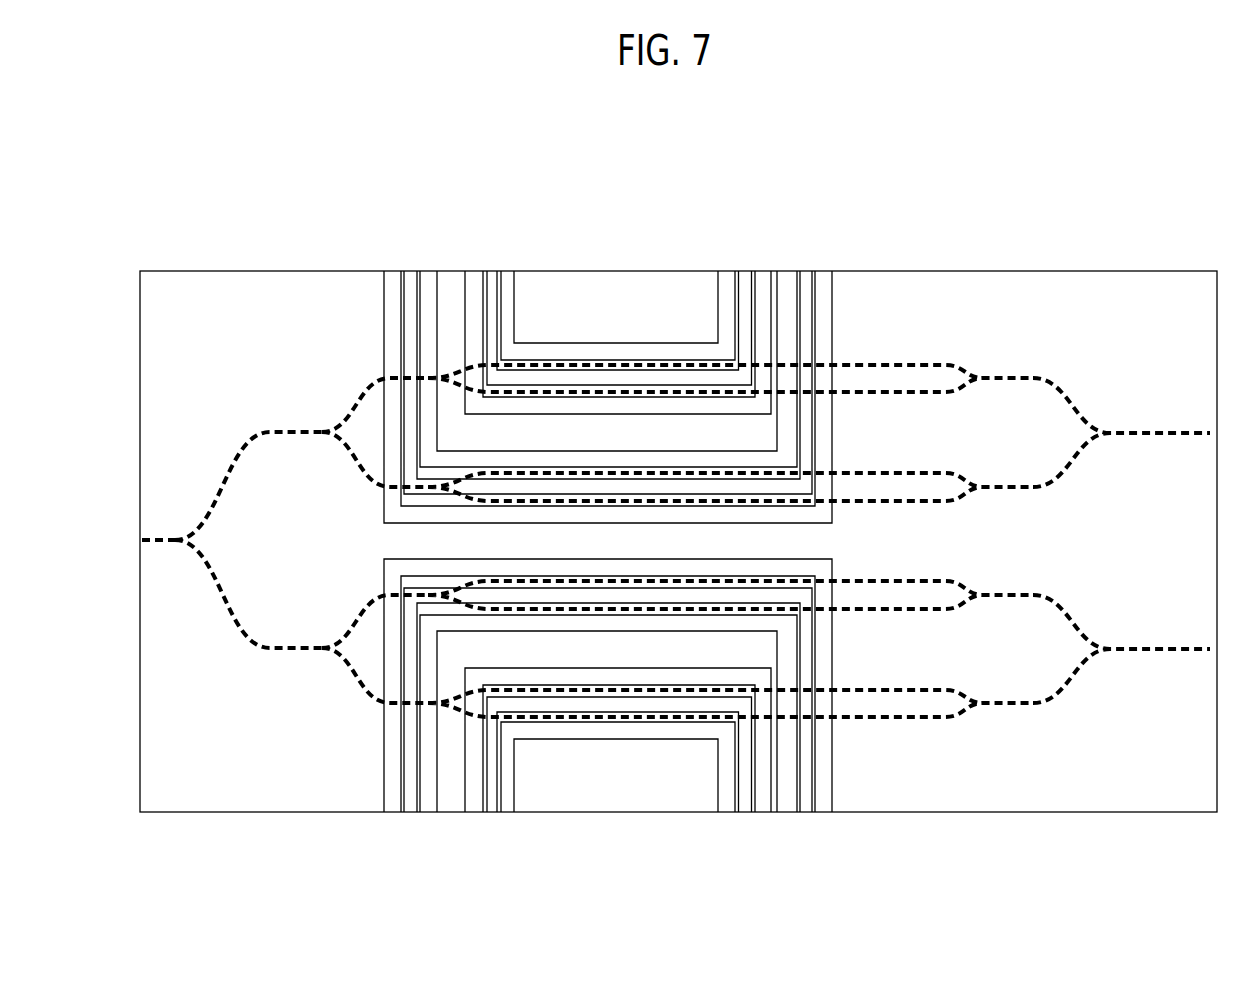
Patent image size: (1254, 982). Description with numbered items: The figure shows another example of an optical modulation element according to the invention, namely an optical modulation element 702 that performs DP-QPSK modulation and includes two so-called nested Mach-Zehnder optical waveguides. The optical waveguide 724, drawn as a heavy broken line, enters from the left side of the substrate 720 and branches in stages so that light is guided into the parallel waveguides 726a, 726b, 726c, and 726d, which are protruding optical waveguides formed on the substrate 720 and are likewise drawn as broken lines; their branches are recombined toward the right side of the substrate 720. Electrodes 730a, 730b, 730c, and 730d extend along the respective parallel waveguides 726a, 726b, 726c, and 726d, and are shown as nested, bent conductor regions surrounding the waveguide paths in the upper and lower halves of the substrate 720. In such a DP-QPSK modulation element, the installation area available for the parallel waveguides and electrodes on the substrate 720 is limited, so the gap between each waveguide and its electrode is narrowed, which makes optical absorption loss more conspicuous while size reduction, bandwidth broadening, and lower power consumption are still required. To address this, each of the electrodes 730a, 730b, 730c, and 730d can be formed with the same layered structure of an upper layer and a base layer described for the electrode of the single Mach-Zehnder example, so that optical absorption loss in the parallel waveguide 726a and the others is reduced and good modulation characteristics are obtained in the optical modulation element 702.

The optical modulation element 702 is at (167, 178).
The substrate 720 is at (258, 283).
The optical waveguide 724 is at (158, 540).
The parallel waveguide 726a is at (893, 352).
The parallel waveguide 726b is at (900, 465).
The parallel waveguide 726c is at (900, 574).
The parallel waveguide 726d is at (900, 682).
The electrode 730a is at (522, 330).
The electrode 730b is at (378, 300).
The electrode 730c is at (380, 777).
The electrode 730d is at (523, 753).